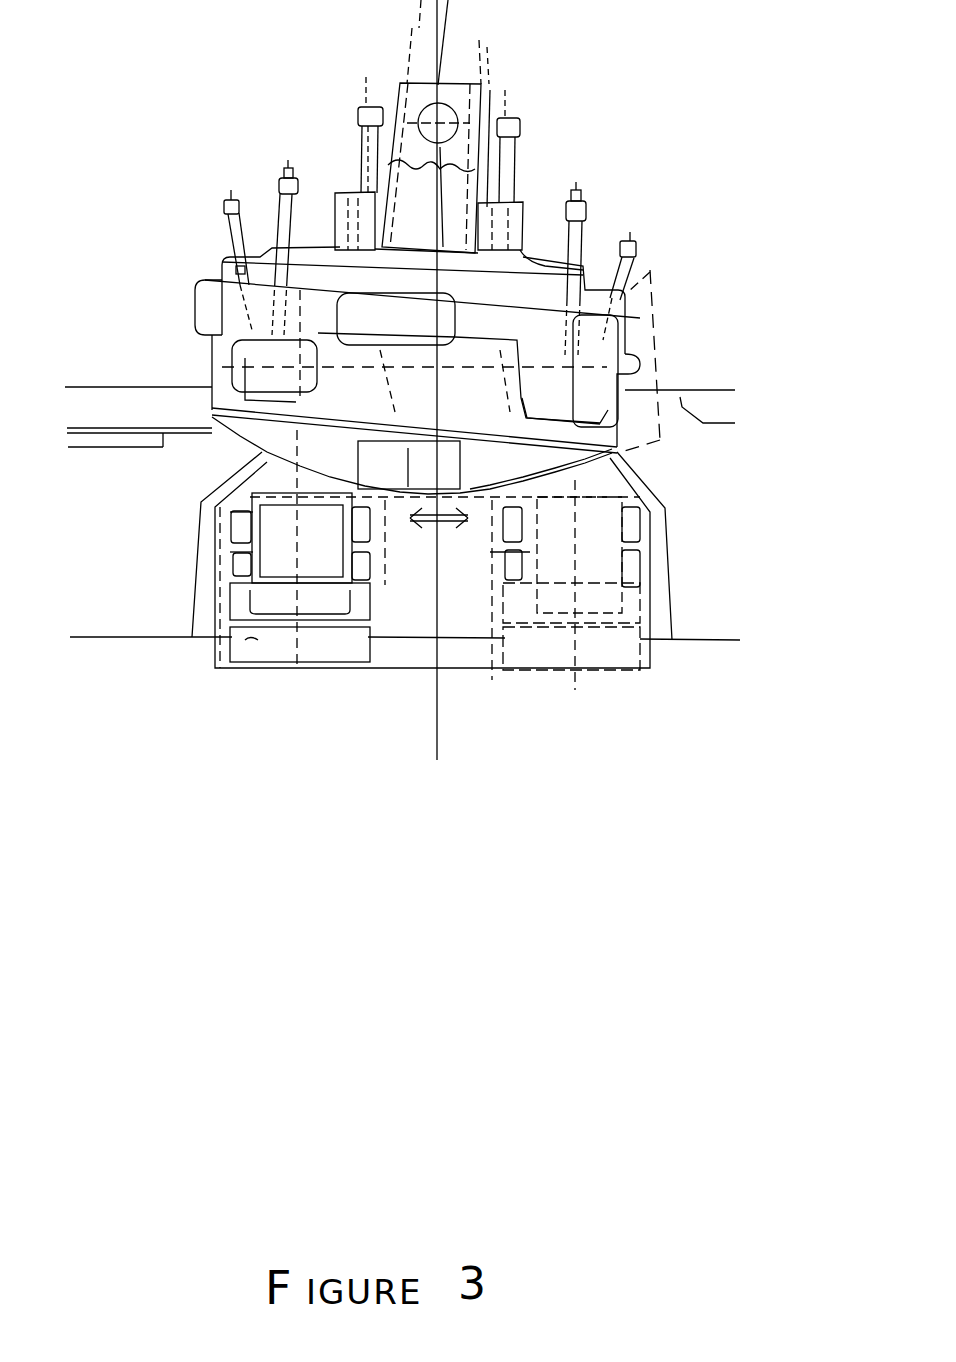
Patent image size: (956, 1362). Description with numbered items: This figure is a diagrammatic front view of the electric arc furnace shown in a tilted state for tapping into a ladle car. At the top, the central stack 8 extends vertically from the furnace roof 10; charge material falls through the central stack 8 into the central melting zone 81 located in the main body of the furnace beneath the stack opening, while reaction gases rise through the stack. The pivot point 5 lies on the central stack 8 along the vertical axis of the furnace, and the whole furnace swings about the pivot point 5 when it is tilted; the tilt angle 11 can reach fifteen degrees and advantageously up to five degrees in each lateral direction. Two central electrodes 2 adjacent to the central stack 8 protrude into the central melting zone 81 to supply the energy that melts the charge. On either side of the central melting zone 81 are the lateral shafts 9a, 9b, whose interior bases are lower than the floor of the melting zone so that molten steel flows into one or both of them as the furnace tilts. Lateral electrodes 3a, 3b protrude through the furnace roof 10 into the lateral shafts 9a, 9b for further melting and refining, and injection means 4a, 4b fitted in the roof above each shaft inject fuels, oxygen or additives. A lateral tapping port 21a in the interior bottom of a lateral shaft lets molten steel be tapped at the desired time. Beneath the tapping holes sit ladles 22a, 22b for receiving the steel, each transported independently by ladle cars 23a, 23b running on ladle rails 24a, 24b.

The central electrodes 2 is at (368, 142).
The lateral electrode 3a is at (283, 207).
The lateral electrode 3b is at (580, 232).
The injection means 4a is at (228, 205).
The injection means 4b is at (628, 246).
The pivot point 5 is at (442, 122).
The central stack 8 is at (452, 158).
The central melting zone 81 is at (414, 312).
The lateral shaft 9a is at (302, 312).
The lateral shaft 9b is at (583, 330).
The furnace roof 10 is at (535, 264).
The tilt angle 11 is at (442, 522).
The lateral tapping port 21a is at (293, 407).
The ladle 22a is at (295, 552).
The ladle 22b is at (537, 423).
The ladle car 23a is at (292, 612).
The ladle car 23b is at (600, 620).
The ladle rail 24a is at (357, 622).
The ladle rail 24b is at (532, 625).